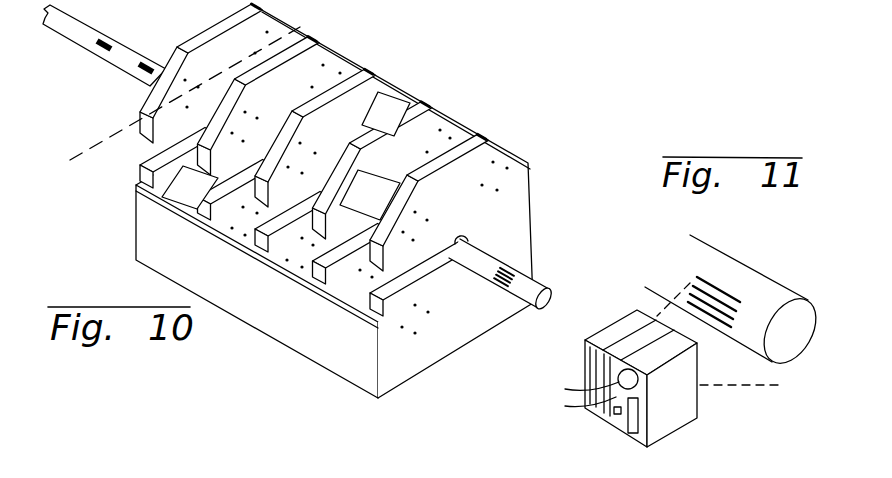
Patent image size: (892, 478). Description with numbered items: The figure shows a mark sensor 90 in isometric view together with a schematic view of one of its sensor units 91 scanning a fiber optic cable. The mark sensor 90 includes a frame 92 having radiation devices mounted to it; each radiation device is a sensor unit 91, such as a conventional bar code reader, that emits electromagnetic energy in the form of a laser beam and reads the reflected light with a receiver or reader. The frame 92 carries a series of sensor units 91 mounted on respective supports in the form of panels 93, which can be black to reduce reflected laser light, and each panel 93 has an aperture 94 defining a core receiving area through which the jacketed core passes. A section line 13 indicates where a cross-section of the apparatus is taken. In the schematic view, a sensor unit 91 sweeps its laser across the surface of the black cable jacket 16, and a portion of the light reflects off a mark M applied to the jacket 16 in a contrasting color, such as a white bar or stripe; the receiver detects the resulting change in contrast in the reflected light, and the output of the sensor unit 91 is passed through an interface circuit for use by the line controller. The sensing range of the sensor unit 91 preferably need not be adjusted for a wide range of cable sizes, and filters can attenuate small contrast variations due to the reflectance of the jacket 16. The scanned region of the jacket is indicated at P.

In FIG. 10, the section line 13- 13 is at (70, 160).
In FIG. 10, the cable jacket 16 is at (523, 284).
In FIG. 11, the cable jacket 16 is at (717, 267).
In FIG. 10, the mark sensor 90 is at (349, 201).
In FIG. 10, the sensor unit 91 is at (193, 188).
In FIG. 11, the sensor unit 91 is at (624, 338).
In FIG. 10, the frame 92 is at (480, 134).
In FIG. 10, the panel 93 is at (503, 147).
In FIG. 10, the aperture 94 is at (469, 242).
In FIG. 10, the mark M is at (108, 66).
In FIG. 10, the polished end face P is at (512, 266).
In FIG. 11, the polished end face P is at (738, 287).